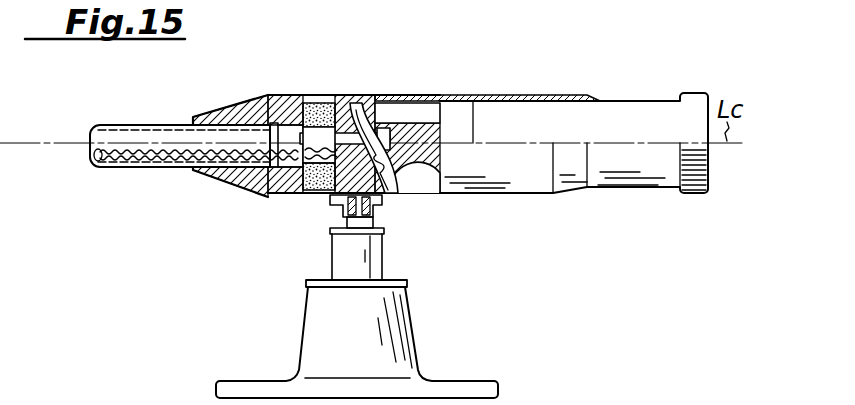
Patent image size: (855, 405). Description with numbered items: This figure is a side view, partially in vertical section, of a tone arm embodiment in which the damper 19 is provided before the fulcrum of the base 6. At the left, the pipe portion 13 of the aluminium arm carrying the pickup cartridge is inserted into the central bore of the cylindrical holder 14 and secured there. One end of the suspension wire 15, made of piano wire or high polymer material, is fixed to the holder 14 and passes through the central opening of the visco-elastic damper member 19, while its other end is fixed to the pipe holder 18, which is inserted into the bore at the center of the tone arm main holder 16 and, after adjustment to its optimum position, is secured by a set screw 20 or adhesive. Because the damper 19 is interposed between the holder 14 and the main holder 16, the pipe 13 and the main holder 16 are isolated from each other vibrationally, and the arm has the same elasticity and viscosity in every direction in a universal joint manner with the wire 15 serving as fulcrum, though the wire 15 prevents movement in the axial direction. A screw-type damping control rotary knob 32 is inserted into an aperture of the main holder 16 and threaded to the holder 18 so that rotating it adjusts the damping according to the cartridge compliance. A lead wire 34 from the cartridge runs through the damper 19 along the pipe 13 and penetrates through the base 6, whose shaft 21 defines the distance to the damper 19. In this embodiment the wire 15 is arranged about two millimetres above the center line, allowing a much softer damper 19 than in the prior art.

The pipe portion 13 is at (124, 124).
The lead wire 34 is at (135, 168).
The cylindrical holder 14 is at (268, 95).
The suspension wire 15 is at (380, 101).
The damper member 19 is at (330, 102).
The pipe holder 18 is at (310, 193).
The tone arm main holder 16 is at (403, 195).
The set screw 20 is at (450, 96).
The damping control rotary knob 32 is at (628, 102).
The shaft 21 is at (373, 222).
The base 6 is at (402, 337).